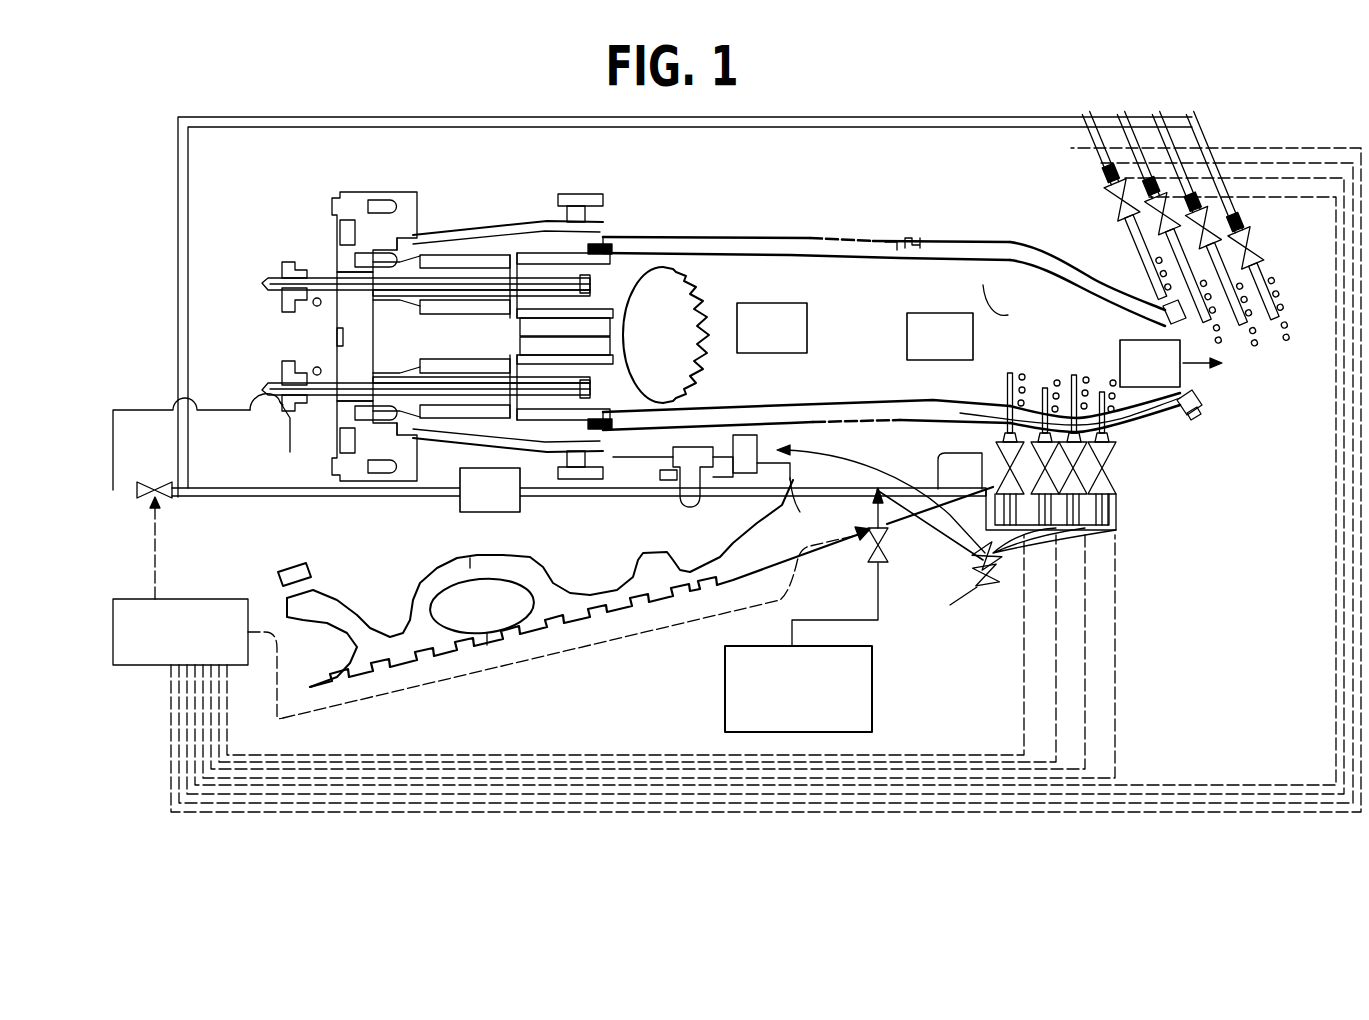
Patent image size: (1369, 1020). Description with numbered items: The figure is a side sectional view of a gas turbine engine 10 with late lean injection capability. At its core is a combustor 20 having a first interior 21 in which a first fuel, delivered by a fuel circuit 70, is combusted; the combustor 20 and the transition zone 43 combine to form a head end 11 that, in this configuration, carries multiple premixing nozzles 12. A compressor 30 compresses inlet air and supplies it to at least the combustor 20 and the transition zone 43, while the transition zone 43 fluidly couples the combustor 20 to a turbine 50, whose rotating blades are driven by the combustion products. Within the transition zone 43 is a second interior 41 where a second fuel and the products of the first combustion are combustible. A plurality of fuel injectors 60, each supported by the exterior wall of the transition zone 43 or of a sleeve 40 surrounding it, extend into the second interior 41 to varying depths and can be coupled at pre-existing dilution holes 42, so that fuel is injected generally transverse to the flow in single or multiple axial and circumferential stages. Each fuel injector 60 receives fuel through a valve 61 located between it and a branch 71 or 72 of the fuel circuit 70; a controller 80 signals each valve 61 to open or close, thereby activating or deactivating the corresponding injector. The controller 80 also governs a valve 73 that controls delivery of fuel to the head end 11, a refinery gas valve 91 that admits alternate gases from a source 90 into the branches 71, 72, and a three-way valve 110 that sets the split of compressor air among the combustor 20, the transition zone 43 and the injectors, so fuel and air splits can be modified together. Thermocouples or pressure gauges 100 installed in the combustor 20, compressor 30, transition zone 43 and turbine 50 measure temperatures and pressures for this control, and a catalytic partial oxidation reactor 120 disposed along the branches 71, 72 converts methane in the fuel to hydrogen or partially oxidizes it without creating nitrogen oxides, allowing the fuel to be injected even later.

The gas turbine engine 10 is at (685, 307).
The head end 11 is at (437, 336).
The premixing nozzles 12 is at (229, 343).
The combustor 20 is at (726, 300).
The first interior 21 is at (666, 335).
The compressor 30 is at (635, 599).
The sleeve 40 is at (1063, 257).
The second interior 41 is at (1169, 233).
The dilution holes 42 is at (967, 291).
The transition zone 43 is at (914, 226).
The turbine 50 is at (1237, 368).
The fuel injectors 60 is at (1068, 357).
The valve 61 is at (1125, 345).
The fuel circuit 70 is at (316, 518).
The branch 71 is at (506, 445).
The branch 72 is at (799, 494).
The valve 73 is at (184, 512).
The controller 80 is at (737, 480).
The source 90 is at (772, 647).
The refinery gas valve 91 is at (855, 544).
The thermocouples/pressure gauges 100 is at (958, 345).
The 3-way valve 110 is at (996, 550).
The catalytic partial oxidation reactor 120 is at (490, 490).